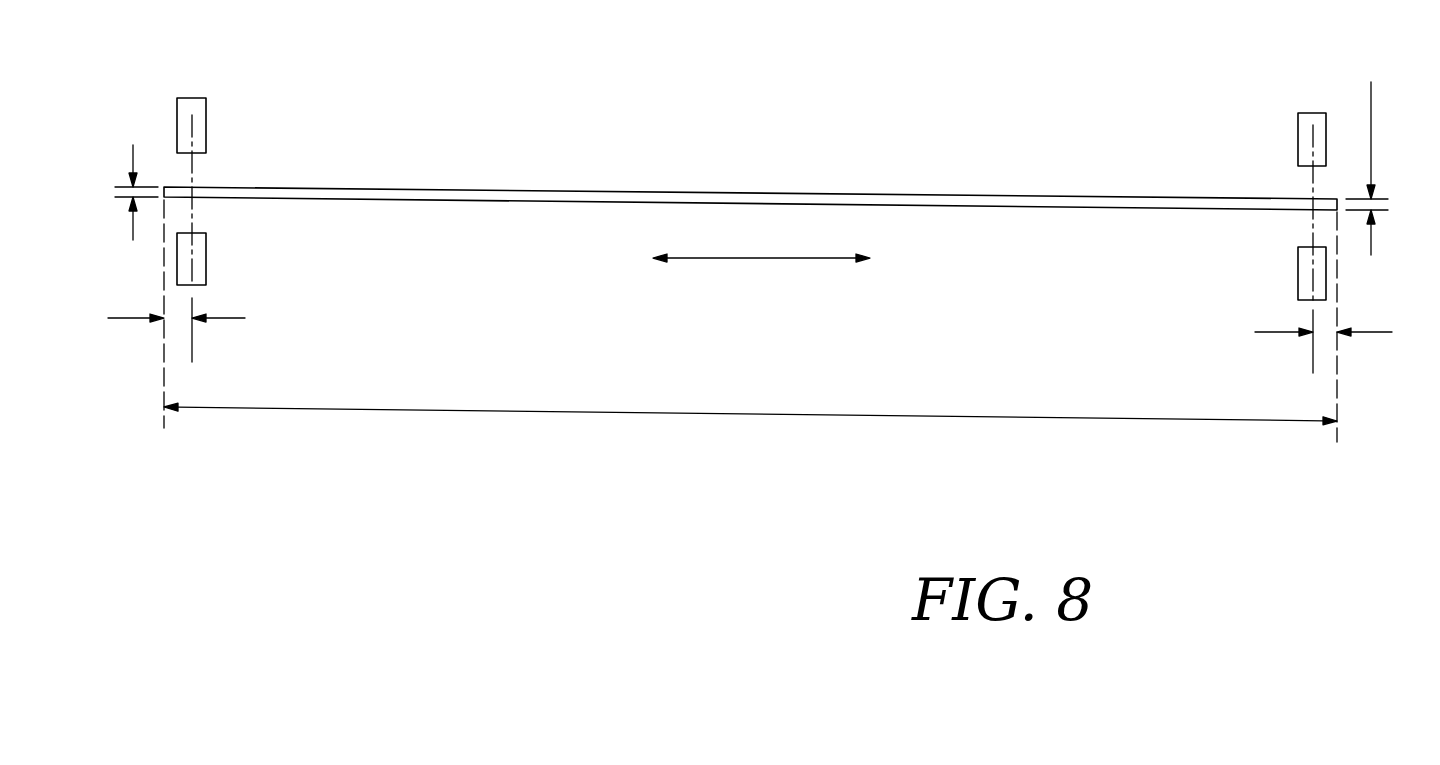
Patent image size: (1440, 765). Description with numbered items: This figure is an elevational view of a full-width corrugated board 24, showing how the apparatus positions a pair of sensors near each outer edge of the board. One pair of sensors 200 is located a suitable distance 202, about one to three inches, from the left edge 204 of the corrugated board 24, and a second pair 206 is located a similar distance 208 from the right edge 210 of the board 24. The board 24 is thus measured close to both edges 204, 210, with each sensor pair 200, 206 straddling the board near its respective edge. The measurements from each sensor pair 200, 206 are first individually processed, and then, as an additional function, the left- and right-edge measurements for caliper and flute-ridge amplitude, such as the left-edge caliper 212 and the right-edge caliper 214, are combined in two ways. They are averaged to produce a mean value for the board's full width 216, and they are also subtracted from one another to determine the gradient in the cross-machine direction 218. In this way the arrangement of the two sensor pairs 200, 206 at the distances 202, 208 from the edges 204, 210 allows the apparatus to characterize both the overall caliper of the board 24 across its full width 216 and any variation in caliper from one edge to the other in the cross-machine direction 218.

The corrugated board 24 is at (325, 188).
The pair of sensors 200 is at (193, 155).
The distance 202 is at (230, 319).
The left edge 204 is at (160, 355).
The second pair 206 is at (1298, 248).
The distance 208 is at (1280, 332).
The right edge 210 is at (1340, 390).
The left-edge caliper 212 is at (133, 160).
The right-edge caliper 214 is at (1371, 90).
The full width 216 is at (545, 411).
The cross-machine direction 218 is at (760, 260).